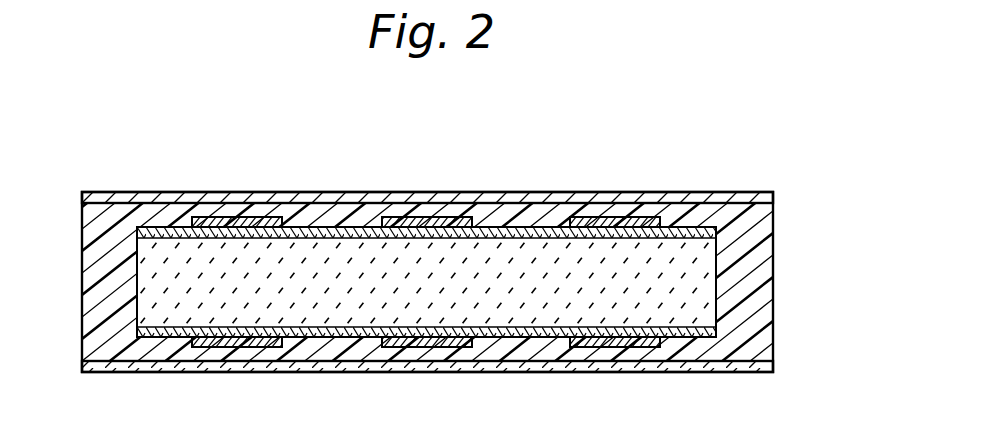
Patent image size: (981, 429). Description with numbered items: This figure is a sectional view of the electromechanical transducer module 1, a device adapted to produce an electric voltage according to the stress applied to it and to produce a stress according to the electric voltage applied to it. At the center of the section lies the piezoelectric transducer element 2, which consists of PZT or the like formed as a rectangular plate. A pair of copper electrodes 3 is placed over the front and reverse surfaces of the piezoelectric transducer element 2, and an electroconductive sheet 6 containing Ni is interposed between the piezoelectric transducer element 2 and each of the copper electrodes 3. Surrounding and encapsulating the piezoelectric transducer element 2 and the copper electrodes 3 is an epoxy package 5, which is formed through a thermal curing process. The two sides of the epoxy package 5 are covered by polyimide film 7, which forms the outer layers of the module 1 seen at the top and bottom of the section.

The electromechanical transducer module 1 is at (724, 158).
The piezoelectric transducer element 2 is at (505, 228).
The copper electrodes 3 is at (221, 217).
The epoxy package 5 is at (773, 266).
The electroconductive sheet 6 is at (291, 226).
The polyimide film 7 is at (124, 192).